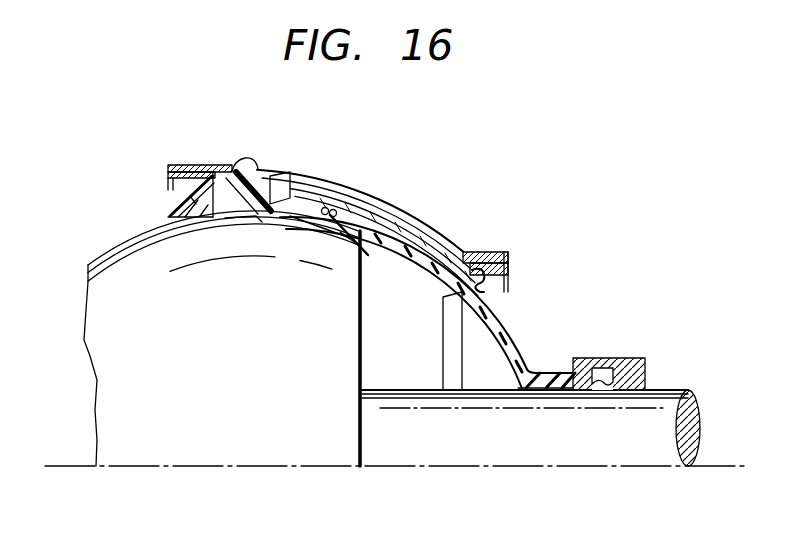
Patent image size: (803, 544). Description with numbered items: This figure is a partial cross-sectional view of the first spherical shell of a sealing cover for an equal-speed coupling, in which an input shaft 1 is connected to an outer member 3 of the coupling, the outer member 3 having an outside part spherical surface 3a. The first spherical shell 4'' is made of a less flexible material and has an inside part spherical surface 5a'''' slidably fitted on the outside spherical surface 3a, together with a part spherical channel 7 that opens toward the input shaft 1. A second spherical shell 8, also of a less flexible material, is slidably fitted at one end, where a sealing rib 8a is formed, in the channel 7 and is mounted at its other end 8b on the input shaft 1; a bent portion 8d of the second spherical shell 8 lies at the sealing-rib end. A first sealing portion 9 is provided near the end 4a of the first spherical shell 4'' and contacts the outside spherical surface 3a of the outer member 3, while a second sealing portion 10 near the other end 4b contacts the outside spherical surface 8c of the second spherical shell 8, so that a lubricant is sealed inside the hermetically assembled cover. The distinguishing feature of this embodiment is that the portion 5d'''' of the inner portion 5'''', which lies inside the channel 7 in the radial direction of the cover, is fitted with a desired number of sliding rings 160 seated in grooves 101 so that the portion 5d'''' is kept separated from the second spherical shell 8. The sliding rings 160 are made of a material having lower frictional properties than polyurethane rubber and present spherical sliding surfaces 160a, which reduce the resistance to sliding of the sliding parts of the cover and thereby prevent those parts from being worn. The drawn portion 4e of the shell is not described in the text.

The input shaft 1 is at (620, 455).
The outer member 3 is at (108, 342).
The outside part spherical surface 3a is at (118, 246).
The end of first spherical shell 4a is at (208, 164).
The first spherical shell 4'' is at (361, 184).
The other end of first spherical shell 4b is at (488, 252).
The cover portion 4e is at (420, 250).
The inner portion 5'''' is at (237, 140).
The inside part spherical surface 5a'''' is at (215, 263).
The portion of inner portion 5d'''' is at (338, 164).
The part spherical channel 7 is at (294, 182).
The second spherical shell 8 is at (507, 318).
The sealing rib 8a is at (347, 237).
The other end of second spherical shell 8b is at (530, 374).
The outside spherical surface of second spherical shell 8c is at (513, 338).
The bent portion 8d is at (431, 292).
The first sealing portion 9 is at (174, 207).
The second sealing portion 10 is at (510, 272).
The grooves 101 is at (398, 142).
The sliding rings 160 is at (303, 243).
The spherical sliding surfaces 160a is at (360, 238).